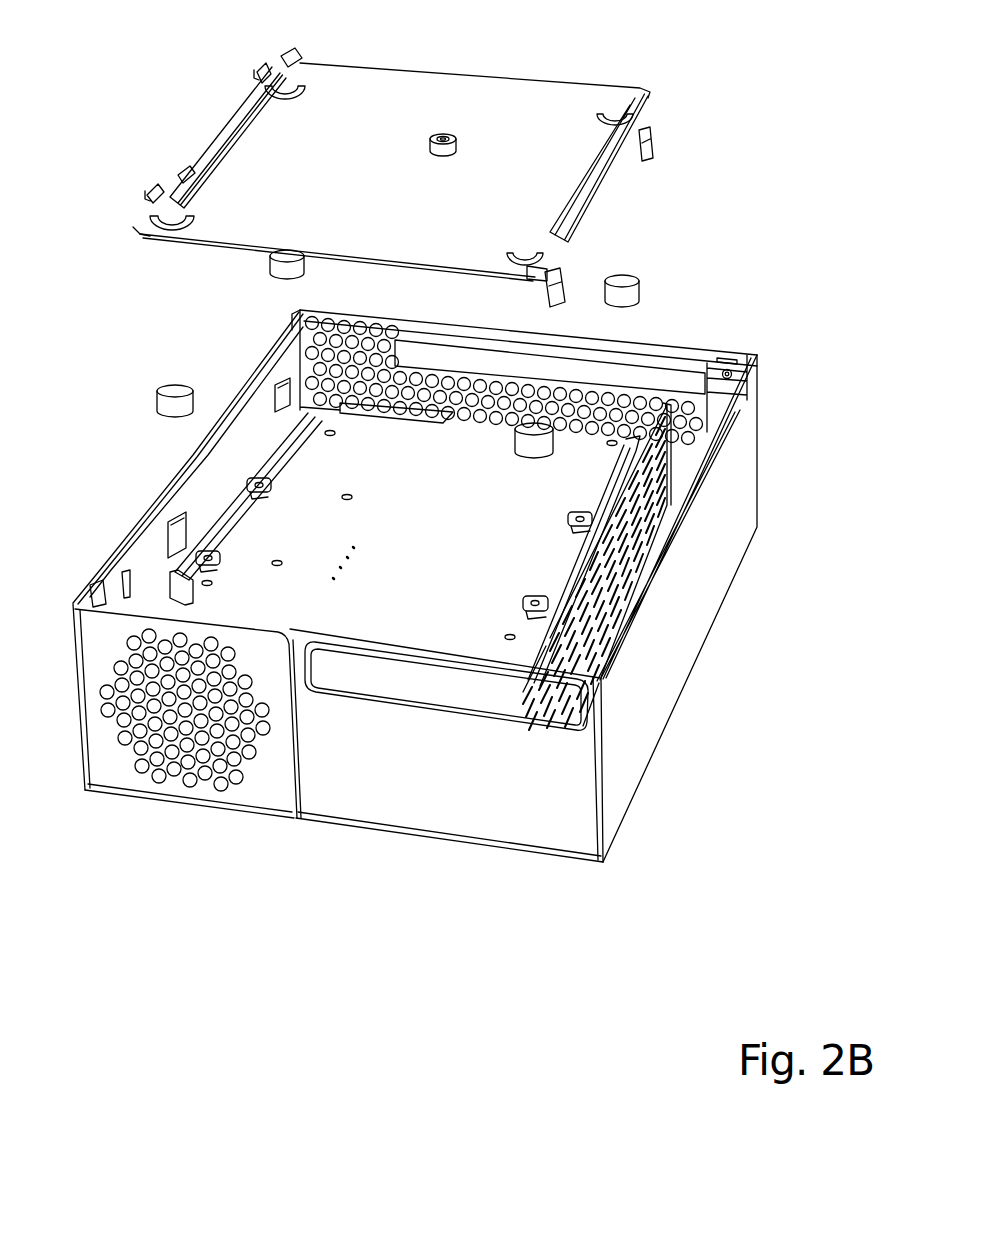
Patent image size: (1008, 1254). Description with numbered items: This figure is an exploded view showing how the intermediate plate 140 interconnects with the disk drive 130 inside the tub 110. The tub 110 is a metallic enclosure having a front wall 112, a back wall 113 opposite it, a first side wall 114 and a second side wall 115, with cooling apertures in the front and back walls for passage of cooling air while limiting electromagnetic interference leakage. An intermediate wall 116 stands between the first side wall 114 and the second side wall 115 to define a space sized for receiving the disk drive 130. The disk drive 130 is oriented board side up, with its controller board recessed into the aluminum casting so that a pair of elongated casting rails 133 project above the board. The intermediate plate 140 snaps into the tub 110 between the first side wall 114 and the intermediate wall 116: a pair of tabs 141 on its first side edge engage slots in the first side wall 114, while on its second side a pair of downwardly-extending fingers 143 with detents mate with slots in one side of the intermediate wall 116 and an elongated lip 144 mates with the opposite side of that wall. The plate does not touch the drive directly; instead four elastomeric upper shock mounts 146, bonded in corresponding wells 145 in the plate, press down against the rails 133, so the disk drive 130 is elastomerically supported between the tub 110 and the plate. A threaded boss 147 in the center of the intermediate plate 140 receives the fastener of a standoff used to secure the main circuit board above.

The tub 110 is at (483, 579).
The front wall 112 is at (450, 783).
The back wall 113 is at (390, 337).
The first side wall 114 is at (147, 567).
The second side wall 115 is at (663, 657).
The intermediate wall 116 is at (660, 453).
The disk drive 130 is at (517, 553).
The casting rails 133 is at (233, 530).
The intermediate plate 140 is at (557, 87).
The tabs 141 is at (258, 70).
The downwardly-extending fingers 143 is at (651, 158).
The elongated lip 144 is at (597, 212).
The wells 145 is at (288, 96).
The upper shock mounts 146 is at (280, 265).
The threaded boss 147 is at (458, 137).